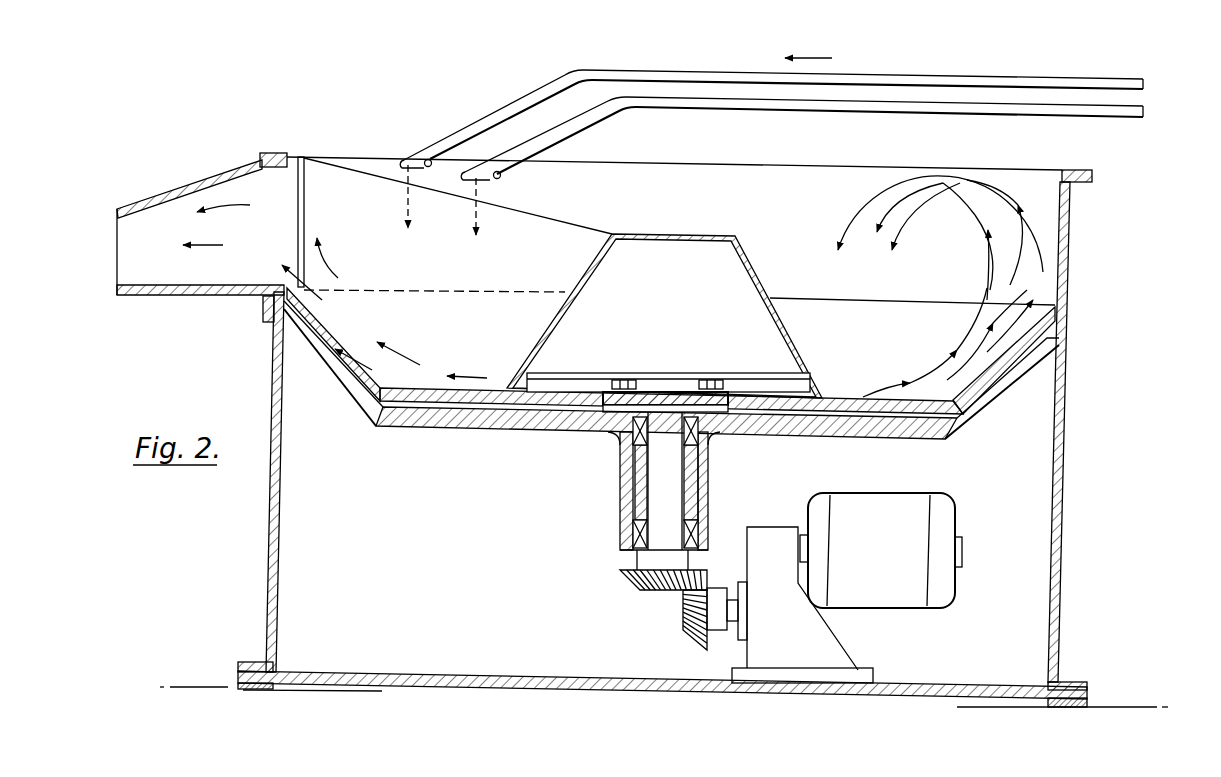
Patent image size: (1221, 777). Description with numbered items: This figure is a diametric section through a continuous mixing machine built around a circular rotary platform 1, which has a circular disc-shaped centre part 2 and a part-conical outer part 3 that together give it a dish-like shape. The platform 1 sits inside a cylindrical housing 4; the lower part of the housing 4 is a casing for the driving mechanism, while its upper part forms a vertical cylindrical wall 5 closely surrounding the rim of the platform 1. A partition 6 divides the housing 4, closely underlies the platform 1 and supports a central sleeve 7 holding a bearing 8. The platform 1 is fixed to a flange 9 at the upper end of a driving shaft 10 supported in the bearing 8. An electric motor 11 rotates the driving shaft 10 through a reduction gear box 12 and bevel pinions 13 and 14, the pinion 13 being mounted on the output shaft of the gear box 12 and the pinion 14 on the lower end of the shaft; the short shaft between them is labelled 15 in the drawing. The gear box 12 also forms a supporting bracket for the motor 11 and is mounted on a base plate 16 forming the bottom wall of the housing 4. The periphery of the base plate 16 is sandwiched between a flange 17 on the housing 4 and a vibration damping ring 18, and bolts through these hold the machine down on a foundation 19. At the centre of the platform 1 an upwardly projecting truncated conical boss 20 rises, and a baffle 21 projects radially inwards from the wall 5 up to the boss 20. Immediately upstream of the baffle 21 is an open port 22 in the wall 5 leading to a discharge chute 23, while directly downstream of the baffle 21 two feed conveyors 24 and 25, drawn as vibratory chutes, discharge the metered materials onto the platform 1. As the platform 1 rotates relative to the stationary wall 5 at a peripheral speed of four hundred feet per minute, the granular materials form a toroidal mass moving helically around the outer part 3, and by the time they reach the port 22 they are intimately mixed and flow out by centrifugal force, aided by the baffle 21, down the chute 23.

The rotary platform 1 is at (815, 295).
The centre part 2 is at (470, 407).
The outer part 3 is at (347, 357).
The housing 4 is at (1060, 505).
The vertical cylindrical wall 5 is at (1069, 265).
The partition 6 is at (945, 439).
The central sleeve 7 is at (627, 498).
The bearing 8 is at (688, 492).
The flange 9 is at (627, 408).
The driving shaft 10 is at (673, 466).
The electric motor 11 is at (902, 598).
The reduction gear box 12 is at (830, 648).
The bevel pinion 13 is at (683, 613).
The bevel pinion 14 is at (625, 577).
The drive shaft 15 is at (733, 619).
The base plate 16 is at (972, 687).
The flange 17 is at (1072, 682).
The vibration damping ring 18 is at (1083, 700).
The foundation 19 is at (1137, 707).
The truncated conical boss 20 is at (672, 232).
The baffle 21 is at (577, 233).
The port 22 is at (304, 216).
The discharge chute 23 is at (175, 290).
The feed conveyor 24 is at (478, 108).
The feed conveyor 25 is at (507, 145).